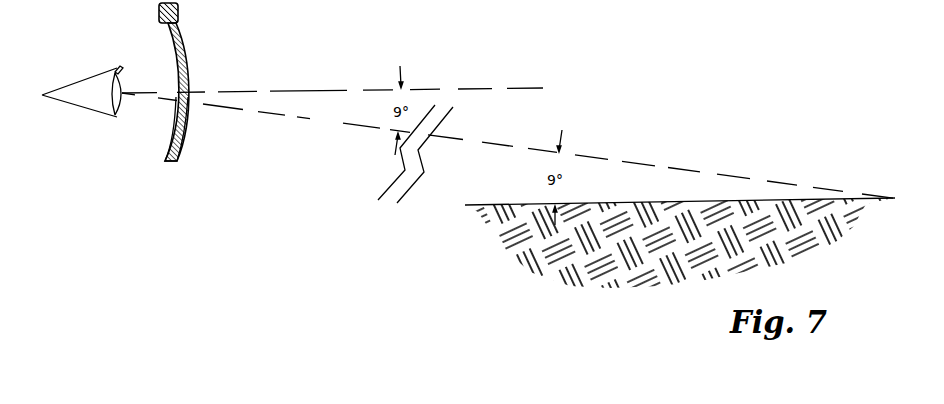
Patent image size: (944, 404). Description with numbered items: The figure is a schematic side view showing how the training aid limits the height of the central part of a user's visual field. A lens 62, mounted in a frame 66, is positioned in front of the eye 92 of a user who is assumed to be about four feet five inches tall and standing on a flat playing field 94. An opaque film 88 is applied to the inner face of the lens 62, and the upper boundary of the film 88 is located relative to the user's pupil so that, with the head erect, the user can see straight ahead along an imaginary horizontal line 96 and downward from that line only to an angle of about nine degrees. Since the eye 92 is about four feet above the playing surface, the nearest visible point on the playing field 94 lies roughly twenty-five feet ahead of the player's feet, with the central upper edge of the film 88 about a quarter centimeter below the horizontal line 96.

The lens 62 is at (187, 65).
The frame 66 is at (178, 13).
The film 88 is at (173, 128).
The eye 92 is at (98, 72).
The playing field 94 is at (532, 204).
The imaginary horizontal line 96 is at (478, 88).